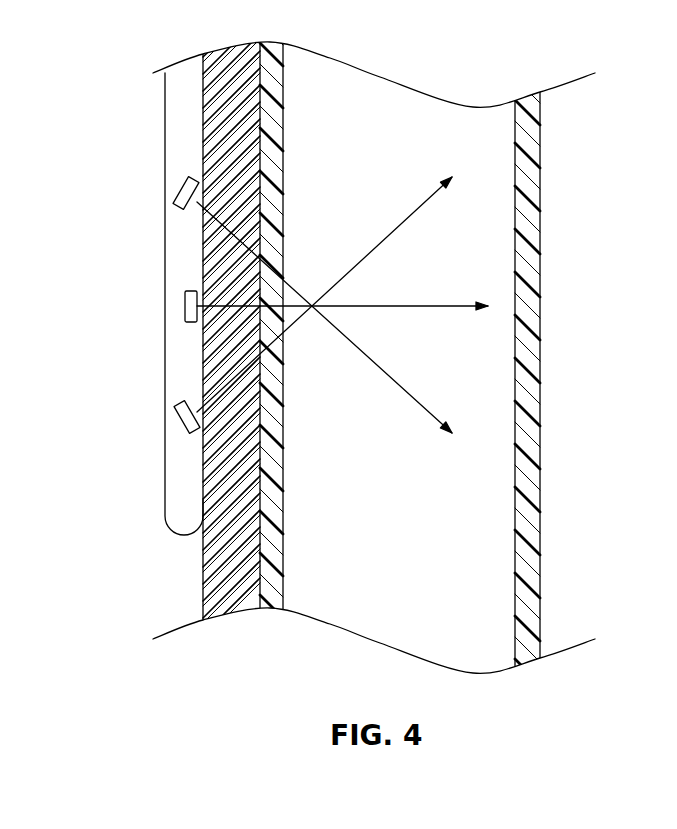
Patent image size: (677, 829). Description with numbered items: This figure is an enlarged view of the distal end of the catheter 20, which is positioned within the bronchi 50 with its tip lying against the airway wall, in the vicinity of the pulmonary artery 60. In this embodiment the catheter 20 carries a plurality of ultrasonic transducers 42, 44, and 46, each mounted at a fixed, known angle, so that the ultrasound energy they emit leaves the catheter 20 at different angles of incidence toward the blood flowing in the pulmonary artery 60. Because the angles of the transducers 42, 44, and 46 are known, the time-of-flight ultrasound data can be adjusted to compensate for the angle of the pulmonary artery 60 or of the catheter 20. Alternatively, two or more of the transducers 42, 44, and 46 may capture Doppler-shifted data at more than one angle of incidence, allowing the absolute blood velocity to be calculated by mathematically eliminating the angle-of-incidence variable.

The catheter 20 is at (165, 240).
The transducer 42 is at (177, 189).
The transducer 44 is at (176, 413).
The transducer 46 is at (185, 305).
The bronchi 50 is at (115, 555).
The pulmonary artery 60 is at (420, 528).